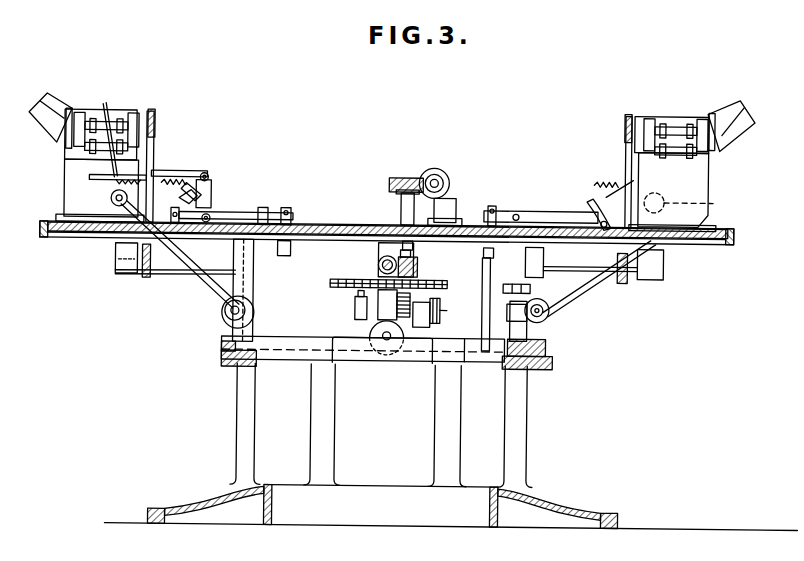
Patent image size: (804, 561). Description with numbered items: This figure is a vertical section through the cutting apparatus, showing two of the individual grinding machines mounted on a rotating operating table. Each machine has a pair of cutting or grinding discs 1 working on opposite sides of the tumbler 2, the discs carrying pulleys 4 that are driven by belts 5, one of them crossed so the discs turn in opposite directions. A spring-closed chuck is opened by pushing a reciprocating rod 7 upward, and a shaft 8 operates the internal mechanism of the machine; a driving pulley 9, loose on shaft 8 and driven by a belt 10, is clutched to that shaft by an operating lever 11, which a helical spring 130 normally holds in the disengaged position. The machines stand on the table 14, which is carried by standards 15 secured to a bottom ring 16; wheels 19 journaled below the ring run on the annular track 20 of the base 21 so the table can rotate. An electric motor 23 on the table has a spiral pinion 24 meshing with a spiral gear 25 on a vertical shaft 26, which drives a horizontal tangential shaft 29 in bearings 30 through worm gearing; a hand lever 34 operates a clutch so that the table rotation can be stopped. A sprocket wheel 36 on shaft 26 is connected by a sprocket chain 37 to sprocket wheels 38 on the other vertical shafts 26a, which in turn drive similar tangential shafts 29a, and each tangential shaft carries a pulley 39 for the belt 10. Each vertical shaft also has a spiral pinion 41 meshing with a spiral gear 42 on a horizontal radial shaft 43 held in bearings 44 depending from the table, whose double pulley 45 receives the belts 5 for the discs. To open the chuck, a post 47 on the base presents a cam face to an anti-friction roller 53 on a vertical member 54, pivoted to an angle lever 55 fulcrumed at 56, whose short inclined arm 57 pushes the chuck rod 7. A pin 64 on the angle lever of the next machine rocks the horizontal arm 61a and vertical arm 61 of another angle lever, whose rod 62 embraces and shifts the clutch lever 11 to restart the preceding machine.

The cutting or grinding discs 1 is at (70, 112).
The tumbler 2 is at (390, 131).
The pulleys 4 is at (154, 130).
The belts 5 is at (152, 158).
The reciprocating rod 7 is at (175, 190).
The shaft 8 is at (110, 201).
The driving pulley 9 is at (90, 266).
The belt 10 is at (204, 292).
The operating lever 11 is at (107, 108).
The table 14 is at (350, 229).
The standards 15 is at (256, 325).
The bottom ring 16 is at (280, 346).
The wheels 19 is at (222, 320).
The annular track 20 is at (220, 360).
The base 21 is at (236, 370).
The electric motor 23 is at (446, 183).
The spiral pinion 24 is at (433, 170).
The spiral gear 25 is at (400, 178).
The vertical shaft 26 is at (400, 207).
The vertical shafts 26a is at (470, 356).
The horizontal tangential shaft 29 is at (400, 346).
The horizontal tangential shafts 29a is at (530, 318).
The bearings 30 is at (434, 313).
The hand lever 34 is at (347, 314).
The sprocket wheel 36 is at (412, 282).
The sprocket chain 37 is at (342, 290).
The sprocket wheels 38 is at (550, 310).
The pulley 39 is at (440, 296).
The spiral pinion 41 is at (418, 263).
The spiral gear 42 is at (378, 266).
The horizontal radial shaft 43 is at (165, 277).
The bearings 44 is at (118, 272).
The double pulley 45 is at (145, 282).
The post 47 is at (440, 304).
The anti-friction roller 53 is at (482, 250).
The vertical member 54 is at (292, 214).
The angle lever 55 is at (280, 212).
The fulcrum 56 is at (600, 206).
The short inclined arm 57 is at (205, 185).
The vertical arm 61 is at (211, 198).
The horizontal arm 61a is at (238, 212).
The rod 62 is at (206, 175).
The pin 64 is at (266, 216).
The helical spring 130 is at (88, 180).